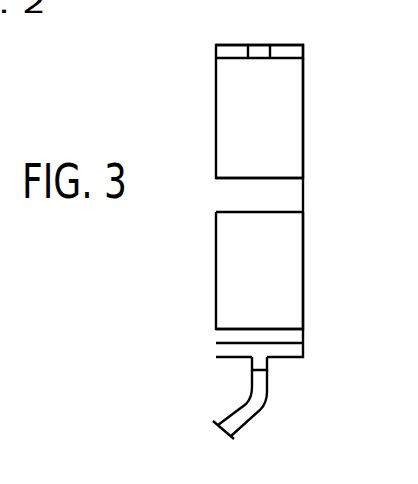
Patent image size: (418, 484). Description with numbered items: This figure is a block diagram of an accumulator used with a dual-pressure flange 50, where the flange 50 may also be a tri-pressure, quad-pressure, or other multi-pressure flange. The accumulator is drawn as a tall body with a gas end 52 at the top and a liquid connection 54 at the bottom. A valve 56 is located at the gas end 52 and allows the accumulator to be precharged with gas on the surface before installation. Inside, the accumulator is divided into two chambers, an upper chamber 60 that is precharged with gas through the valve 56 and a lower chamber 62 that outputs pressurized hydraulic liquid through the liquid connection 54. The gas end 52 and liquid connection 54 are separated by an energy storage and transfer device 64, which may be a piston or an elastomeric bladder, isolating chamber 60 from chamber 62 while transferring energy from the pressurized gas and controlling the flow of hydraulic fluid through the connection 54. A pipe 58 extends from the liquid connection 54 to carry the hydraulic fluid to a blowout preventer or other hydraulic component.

The dual-pressure flange 50 is at (292, 352).
The gas end 52 is at (303, 52).
The liquid connection 54 is at (318, 335).
The valve 56 is at (258, 50).
The pipe 58 is at (245, 409).
The chamber 60 is at (237, 118).
The chamber 62 is at (237, 268).
The energy storage and transfer device 64 is at (294, 194).